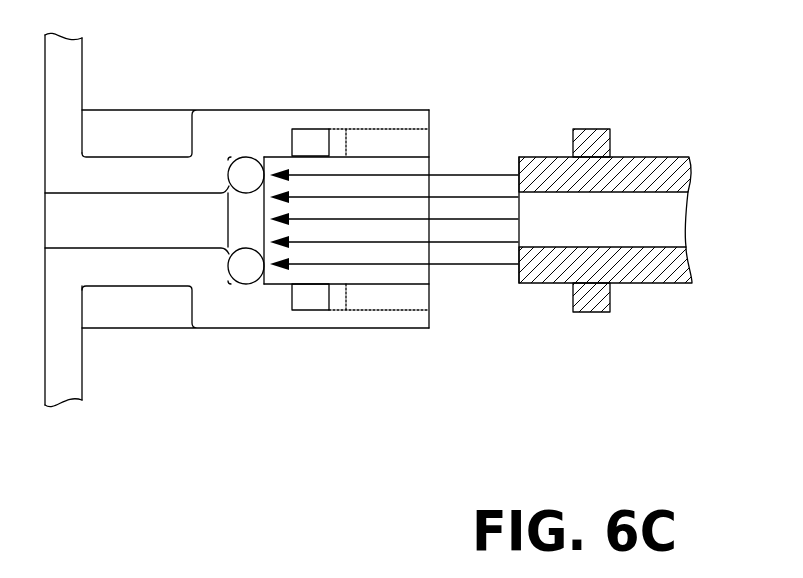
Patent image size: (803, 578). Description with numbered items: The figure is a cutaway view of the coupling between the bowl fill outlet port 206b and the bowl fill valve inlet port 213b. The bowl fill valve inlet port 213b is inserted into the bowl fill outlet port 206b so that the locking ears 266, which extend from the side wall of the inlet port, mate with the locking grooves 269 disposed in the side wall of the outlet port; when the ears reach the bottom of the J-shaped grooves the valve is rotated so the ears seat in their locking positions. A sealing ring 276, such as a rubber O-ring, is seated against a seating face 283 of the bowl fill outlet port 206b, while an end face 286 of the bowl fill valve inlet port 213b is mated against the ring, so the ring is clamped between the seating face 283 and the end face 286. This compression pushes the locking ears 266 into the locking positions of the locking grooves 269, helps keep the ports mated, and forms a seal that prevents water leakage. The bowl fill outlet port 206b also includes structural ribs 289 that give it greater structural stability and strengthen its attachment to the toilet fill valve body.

The bowl fill outlet port 206b is at (248, 428).
The bowl fill valve inlet port 213b is at (597, 372).
The structural ribs 289 is at (137, 135).
The seating face 283 is at (229, 168).
The sealing ring 276 is at (243, 220).
The locking grooves 269 is at (380, 142).
The locking ears 266 is at (596, 139).
The end face 286 is at (518, 160).